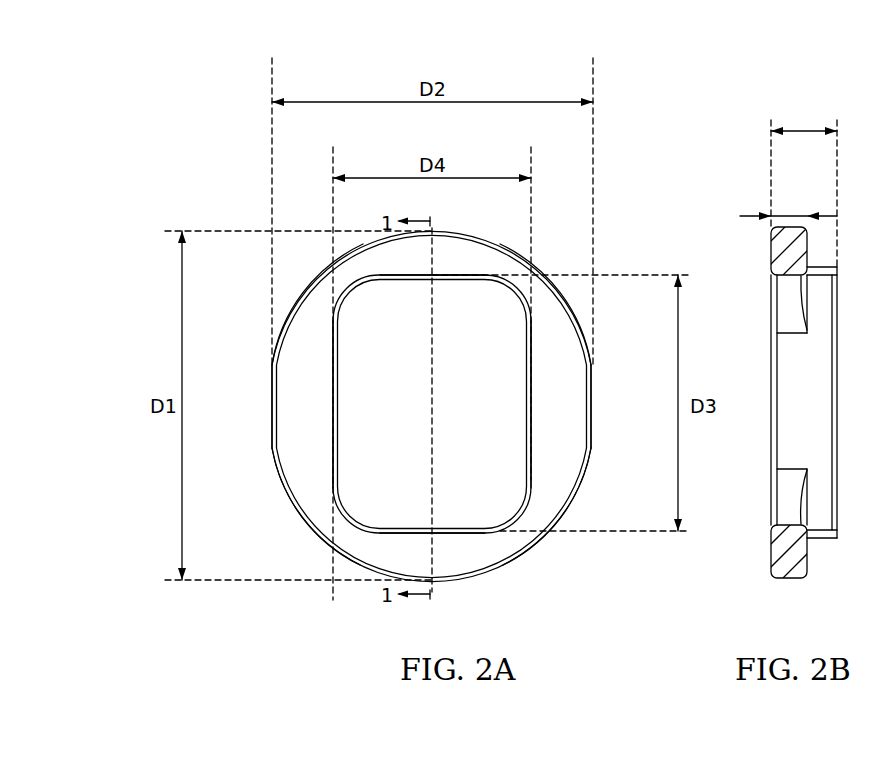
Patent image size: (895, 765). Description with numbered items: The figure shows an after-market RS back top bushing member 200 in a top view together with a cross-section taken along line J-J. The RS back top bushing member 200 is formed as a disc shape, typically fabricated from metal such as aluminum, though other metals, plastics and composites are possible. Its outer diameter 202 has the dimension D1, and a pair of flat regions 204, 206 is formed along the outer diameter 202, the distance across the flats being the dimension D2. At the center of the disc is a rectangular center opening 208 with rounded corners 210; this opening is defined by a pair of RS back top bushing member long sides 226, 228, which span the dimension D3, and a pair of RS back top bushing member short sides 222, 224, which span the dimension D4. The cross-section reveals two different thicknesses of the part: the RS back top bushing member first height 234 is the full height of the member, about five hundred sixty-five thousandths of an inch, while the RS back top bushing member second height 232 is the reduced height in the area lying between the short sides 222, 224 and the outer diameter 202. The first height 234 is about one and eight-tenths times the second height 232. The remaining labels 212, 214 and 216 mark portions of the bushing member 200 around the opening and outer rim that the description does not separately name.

In FIG. 2A, the RS back top bushing member 200 is at (246, 172).
In FIG. 2A, the outer diameter 202 is at (536, 270).
In FIG. 2A, the flat region 204 is at (272, 423).
In FIG. 2A, the flat region 206 is at (593, 425).
In FIG. 2A, the rectangular center opening 208 is at (365, 477).
In FIG. 2A, the rounded corners 210 is at (358, 498).
In FIG. 2A, the lower right arc portion 212 is at (504, 540).
In FIG. 2A, the upper right arc portion 214 is at (508, 288).
In FIG. 2A, the upper left arc portion 216 is at (352, 288).
In FIG. 2A, the RS back top bushing member short side 222 is at (468, 276).
In FIG. 2A, the RS back top bushing member short side 224 is at (470, 534).
In FIG. 2A, the RS back top bushing member long side 226 is at (333, 387).
In FIG. 2A, the RS back top bushing member long side 228 is at (531, 387).
In FIG. 2B, the RS back top bushing member second height 232 is at (798, 214).
In FIG. 2B, the RS back top bushing member first height 234 is at (802, 129).